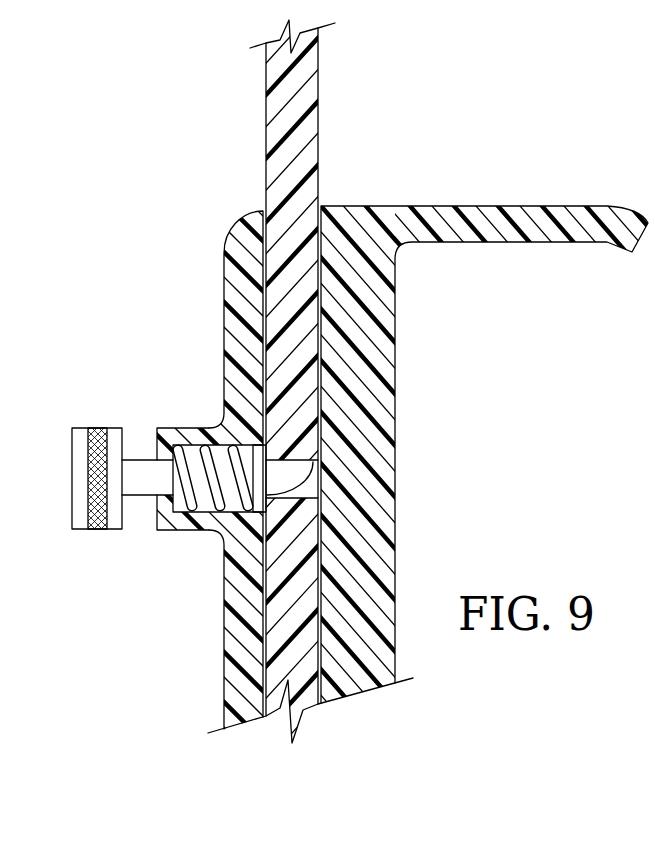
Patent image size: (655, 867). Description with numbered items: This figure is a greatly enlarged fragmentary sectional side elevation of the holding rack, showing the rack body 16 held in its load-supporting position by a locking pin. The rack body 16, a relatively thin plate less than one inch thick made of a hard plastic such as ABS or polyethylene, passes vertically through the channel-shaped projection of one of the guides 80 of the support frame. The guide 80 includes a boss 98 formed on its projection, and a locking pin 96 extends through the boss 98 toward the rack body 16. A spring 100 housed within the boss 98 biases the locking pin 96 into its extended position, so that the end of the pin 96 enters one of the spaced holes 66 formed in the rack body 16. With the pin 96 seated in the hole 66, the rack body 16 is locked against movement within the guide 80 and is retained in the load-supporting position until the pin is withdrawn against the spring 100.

The rack body 16 is at (265, 111).
The guide 80 is at (224, 255).
The boss 98 is at (173, 428).
The locking pin 96 is at (72, 427).
The spring 100 is at (210, 503).
The spaced hole 66 is at (312, 483).